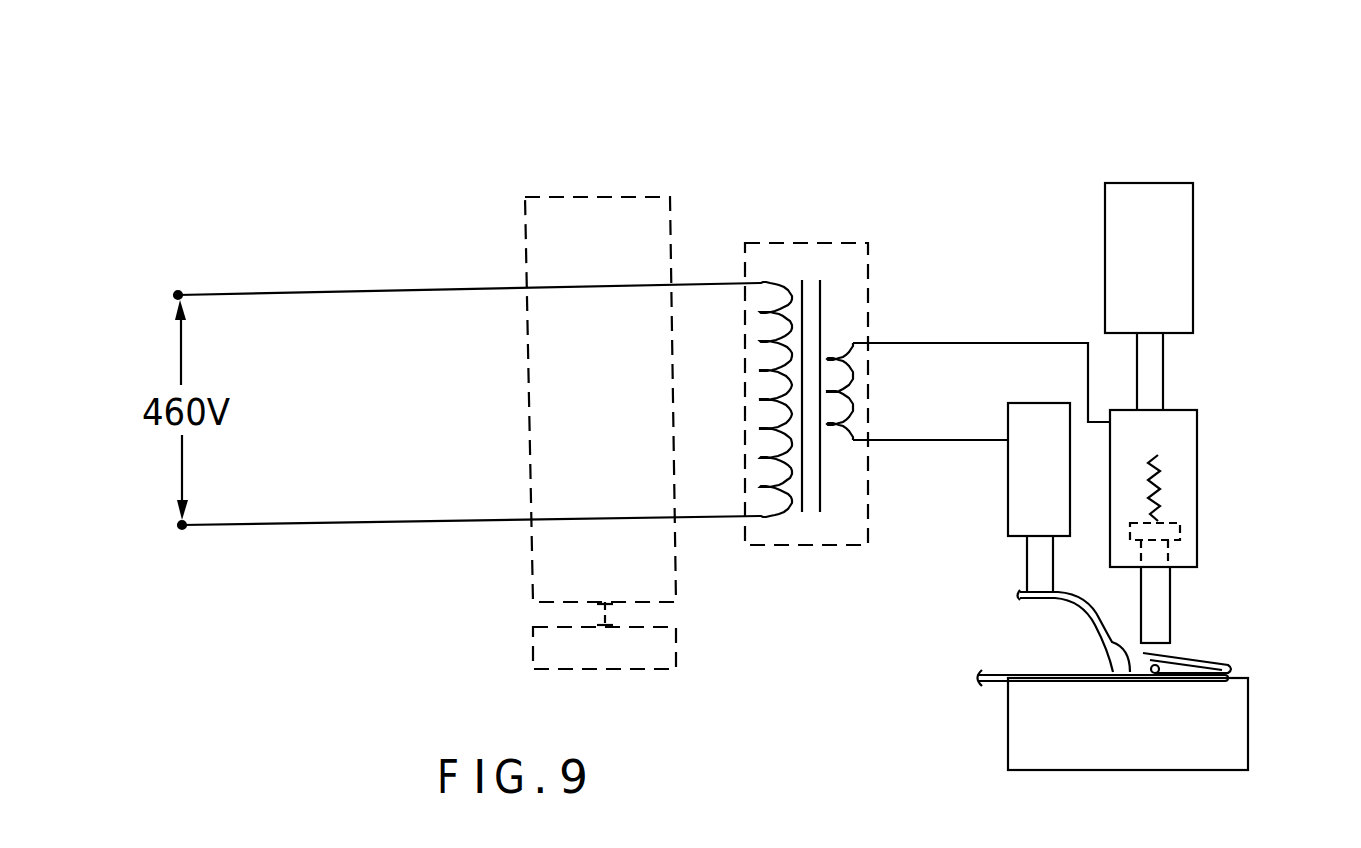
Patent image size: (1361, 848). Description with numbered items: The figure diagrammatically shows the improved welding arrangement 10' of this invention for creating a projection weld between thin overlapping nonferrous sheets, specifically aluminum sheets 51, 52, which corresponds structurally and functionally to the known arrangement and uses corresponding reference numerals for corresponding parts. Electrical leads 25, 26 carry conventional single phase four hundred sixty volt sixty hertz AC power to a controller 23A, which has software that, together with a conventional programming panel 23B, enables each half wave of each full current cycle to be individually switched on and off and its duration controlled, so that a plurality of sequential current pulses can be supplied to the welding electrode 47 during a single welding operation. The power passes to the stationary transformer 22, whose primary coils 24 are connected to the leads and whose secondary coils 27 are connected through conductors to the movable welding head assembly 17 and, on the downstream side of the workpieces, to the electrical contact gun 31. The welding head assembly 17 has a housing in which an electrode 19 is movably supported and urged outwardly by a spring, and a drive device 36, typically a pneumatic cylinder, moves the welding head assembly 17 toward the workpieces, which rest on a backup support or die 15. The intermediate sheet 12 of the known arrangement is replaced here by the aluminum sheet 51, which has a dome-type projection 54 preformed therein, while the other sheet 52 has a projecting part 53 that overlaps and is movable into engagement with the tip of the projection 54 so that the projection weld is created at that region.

The welding arrangement 10' is at (875, 69).
The electrical lead 25 is at (232, 293).
The electrical lead 26 is at (232, 527).
The controller 23A is at (562, 195).
The programming panel 23B is at (565, 655).
The transformer 22 is at (837, 387).
The primary coils 24 is at (786, 520).
The secondary coils 27 is at (835, 362).
The drive device 36 is at (1175, 238).
The movable welding head assembly 17 is at (1206, 479).
The electrode 19 is at (1165, 585).
The welding electrode 47 is at (1158, 632).
The electrical contact gun 31 is at (1018, 493).
The steel sheet 12 is at (1098, 628).
The aluminum sheet 51 is at (1018, 598).
The projecting part 53 is at (1215, 660).
The projection 54 is at (1153, 680).
The aluminum sheet 52 is at (980, 683).
The die 15 is at (1225, 762).